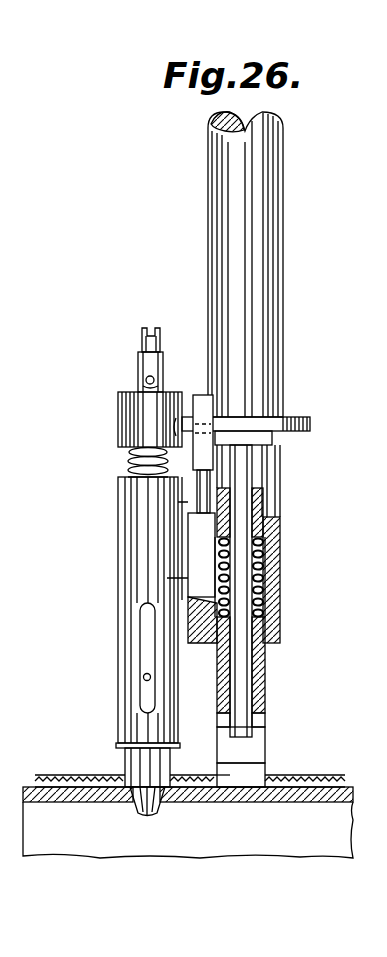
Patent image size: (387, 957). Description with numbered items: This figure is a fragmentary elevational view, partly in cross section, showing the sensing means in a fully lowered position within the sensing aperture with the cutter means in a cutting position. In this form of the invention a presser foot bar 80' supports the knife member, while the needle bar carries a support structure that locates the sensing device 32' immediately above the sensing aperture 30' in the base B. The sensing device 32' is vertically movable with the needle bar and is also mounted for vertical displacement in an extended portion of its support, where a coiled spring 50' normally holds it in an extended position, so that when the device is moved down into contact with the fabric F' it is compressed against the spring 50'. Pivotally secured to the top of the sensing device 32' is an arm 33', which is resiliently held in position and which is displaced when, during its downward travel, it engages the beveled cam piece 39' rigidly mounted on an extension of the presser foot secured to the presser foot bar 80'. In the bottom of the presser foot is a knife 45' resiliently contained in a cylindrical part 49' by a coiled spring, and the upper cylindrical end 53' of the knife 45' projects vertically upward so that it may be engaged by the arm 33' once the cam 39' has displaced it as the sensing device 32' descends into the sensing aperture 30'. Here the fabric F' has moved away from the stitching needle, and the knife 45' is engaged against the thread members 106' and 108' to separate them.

The presser foot bar 80' is at (267, 264).
The beveled cam piece 39' is at (194, 493).
The arm 33' is at (253, 437).
The upper cylindrical end 53' is at (276, 591).
The coiled spring 50' is at (270, 578).
The cylindrical part 49' is at (270, 586).
The thread member 106' is at (268, 748).
The thread member 108' is at (268, 765).
The knife 45' is at (204, 763).
The sensing aperture 30' is at (164, 582).
The sensing device 32' is at (112, 812).
The fabric F' is at (190, 765).
The base B is at (348, 795).